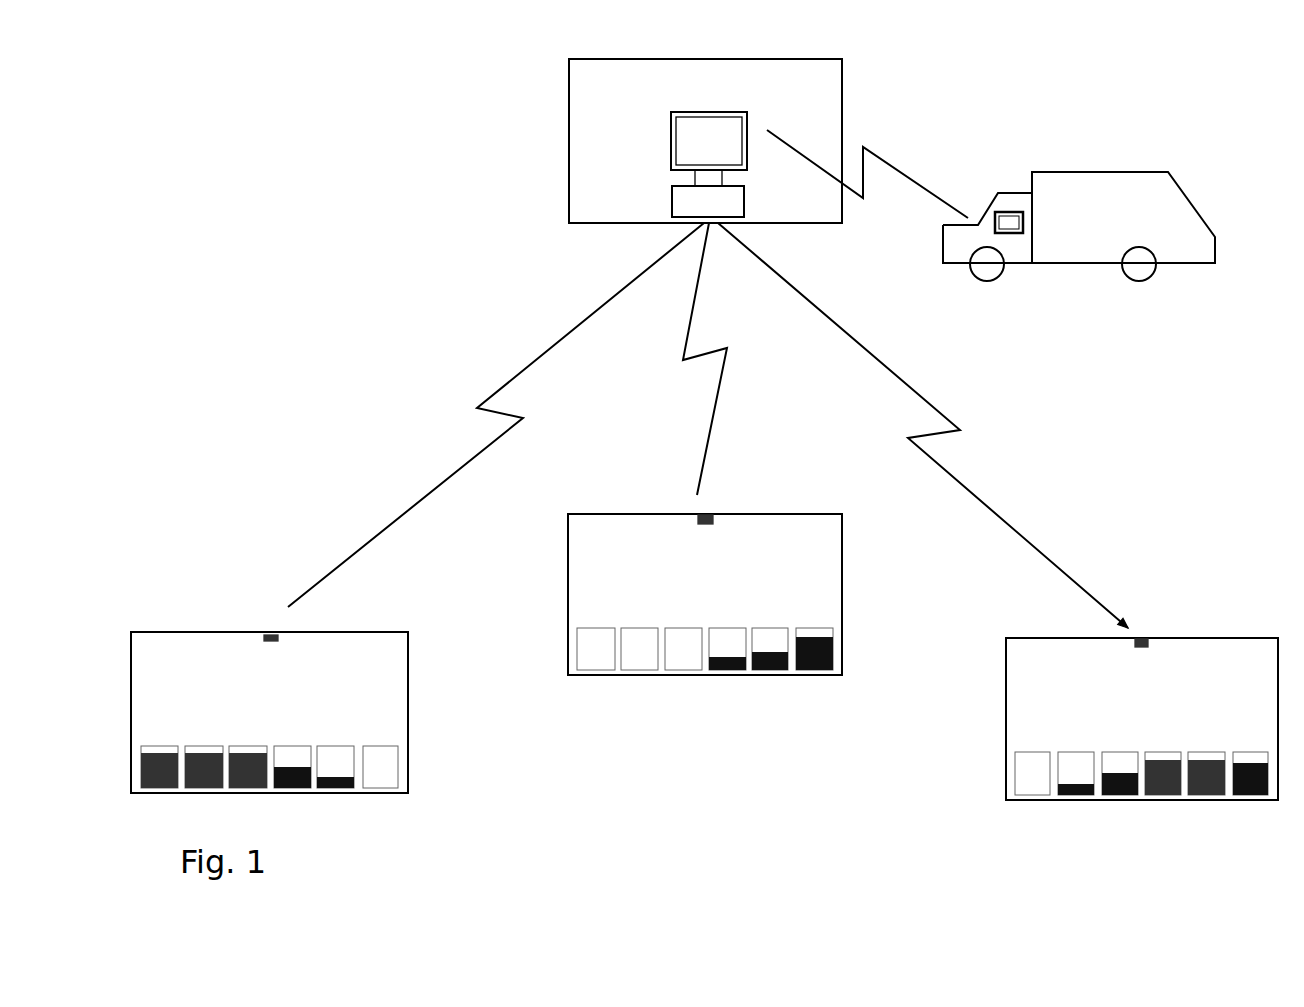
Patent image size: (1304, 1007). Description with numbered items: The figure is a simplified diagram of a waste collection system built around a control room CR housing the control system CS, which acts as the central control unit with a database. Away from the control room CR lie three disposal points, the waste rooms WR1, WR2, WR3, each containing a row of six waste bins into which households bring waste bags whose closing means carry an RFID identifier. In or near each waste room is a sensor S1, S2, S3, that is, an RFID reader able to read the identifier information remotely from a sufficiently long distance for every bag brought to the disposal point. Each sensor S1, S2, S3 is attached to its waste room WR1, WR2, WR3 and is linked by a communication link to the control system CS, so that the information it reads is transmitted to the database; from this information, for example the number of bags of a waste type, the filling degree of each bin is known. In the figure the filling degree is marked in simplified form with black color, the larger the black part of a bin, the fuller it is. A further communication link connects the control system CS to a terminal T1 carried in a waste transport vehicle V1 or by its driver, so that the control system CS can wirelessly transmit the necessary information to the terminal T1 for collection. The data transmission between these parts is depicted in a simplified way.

The control room CR is at (584, 96).
The control system CS is at (697, 196).
The waste transport vehicle V1 is at (1088, 190).
The terminal T1 is at (1000, 212).
The waste room WR1 is at (155, 656).
The waste room WR2 is at (603, 552).
The waste room WR3 is at (1210, 657).
The sensor S1 is at (270, 633).
The sensor S2 is at (695, 515).
The sensor S3 is at (1140, 638).